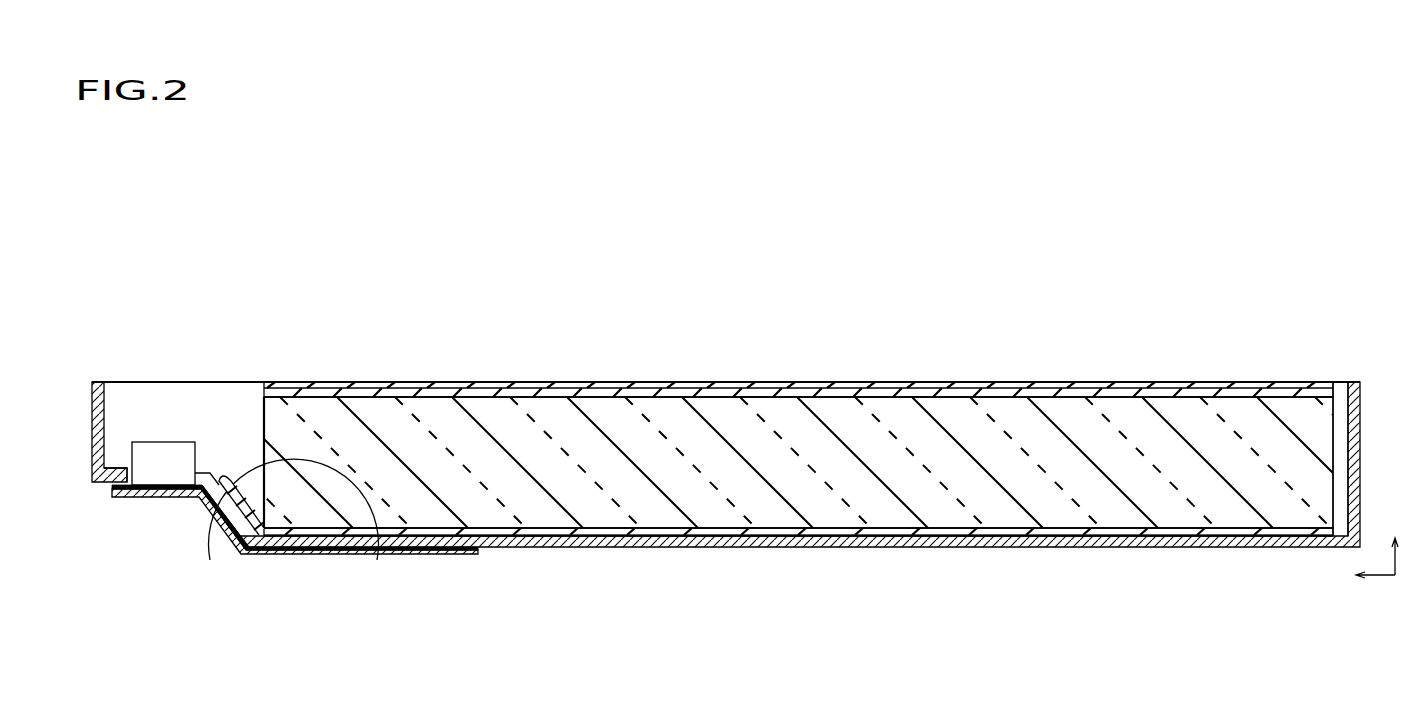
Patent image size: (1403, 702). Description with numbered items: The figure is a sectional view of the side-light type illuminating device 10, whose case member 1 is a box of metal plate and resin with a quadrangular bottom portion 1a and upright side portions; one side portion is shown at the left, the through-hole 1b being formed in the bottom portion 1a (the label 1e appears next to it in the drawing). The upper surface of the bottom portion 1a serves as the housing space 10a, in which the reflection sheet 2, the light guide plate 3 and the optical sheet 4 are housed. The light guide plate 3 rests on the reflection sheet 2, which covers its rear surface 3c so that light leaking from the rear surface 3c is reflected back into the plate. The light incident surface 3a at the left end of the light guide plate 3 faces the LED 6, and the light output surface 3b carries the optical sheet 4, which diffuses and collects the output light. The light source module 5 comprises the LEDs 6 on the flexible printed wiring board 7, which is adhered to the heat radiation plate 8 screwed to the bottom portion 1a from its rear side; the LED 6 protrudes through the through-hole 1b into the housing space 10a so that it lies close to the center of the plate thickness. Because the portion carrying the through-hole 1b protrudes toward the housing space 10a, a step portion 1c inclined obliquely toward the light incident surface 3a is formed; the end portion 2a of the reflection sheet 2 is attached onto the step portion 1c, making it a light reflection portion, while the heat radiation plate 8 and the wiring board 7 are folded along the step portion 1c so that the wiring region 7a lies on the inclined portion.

The case member 1 is at (785, 542).
The bottom portion 1a is at (505, 534).
The through-hole 1b is at (87, 392).
The step portion 1c is at (372, 551).
The protruding portion of side wall 1e is at (125, 468).
The reflection sheet 2 is at (730, 531).
The end portion of the reflection sheet 2a is at (327, 551).
The light guide plate 3 is at (655, 415).
The light incident surface 3a is at (263, 417).
The light output surface 3b is at (368, 397).
The rear surface 3c is at (605, 531).
The optical sheet 4 is at (729, 390).
The light source module 5 is at (187, 561).
The light-emitting diode 6 is at (180, 470).
The flexible printed wiring board 7 is at (150, 489).
The wiring region 7a is at (227, 540).
The heat radiation plate 8 is at (122, 494).
The illuminating device 10 is at (1332, 365).
The housing space 10a is at (217, 428).